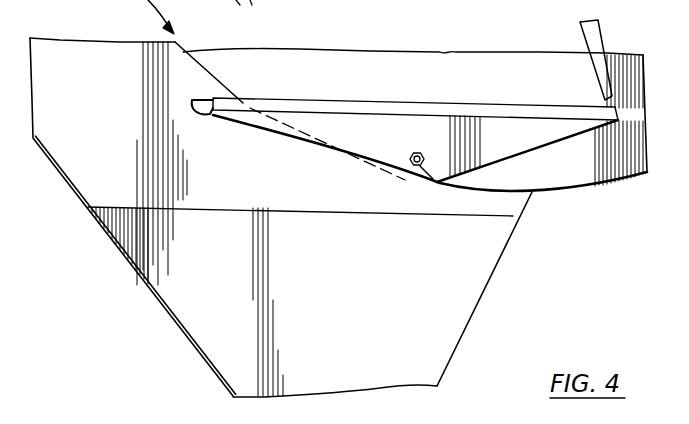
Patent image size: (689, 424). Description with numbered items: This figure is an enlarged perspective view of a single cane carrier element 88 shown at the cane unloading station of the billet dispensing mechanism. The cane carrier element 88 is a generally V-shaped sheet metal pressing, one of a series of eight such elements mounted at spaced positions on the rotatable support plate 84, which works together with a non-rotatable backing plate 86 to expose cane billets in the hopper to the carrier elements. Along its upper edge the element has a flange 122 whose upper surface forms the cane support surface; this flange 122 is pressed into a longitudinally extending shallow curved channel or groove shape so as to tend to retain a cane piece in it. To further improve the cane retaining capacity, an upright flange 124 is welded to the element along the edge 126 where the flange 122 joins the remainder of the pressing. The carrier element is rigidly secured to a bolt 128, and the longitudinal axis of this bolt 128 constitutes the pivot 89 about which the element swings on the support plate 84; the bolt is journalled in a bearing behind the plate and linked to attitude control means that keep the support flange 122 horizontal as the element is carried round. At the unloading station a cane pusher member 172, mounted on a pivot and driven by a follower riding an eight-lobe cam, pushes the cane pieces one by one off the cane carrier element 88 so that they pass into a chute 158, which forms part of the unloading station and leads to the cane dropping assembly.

The support plate 84 is at (202, 60).
The backing plate 86 is at (66, 56).
The cane carrier element 88 is at (534, 145).
The pivot 89 is at (414, 157).
The flange 122 is at (192, 112).
The upright flange 124 is at (294, 100).
The edge 126 is at (222, 82).
The bolt 128 is at (421, 180).
The chute 158 is at (468, 285).
The cane pusher member 172 is at (583, 43).